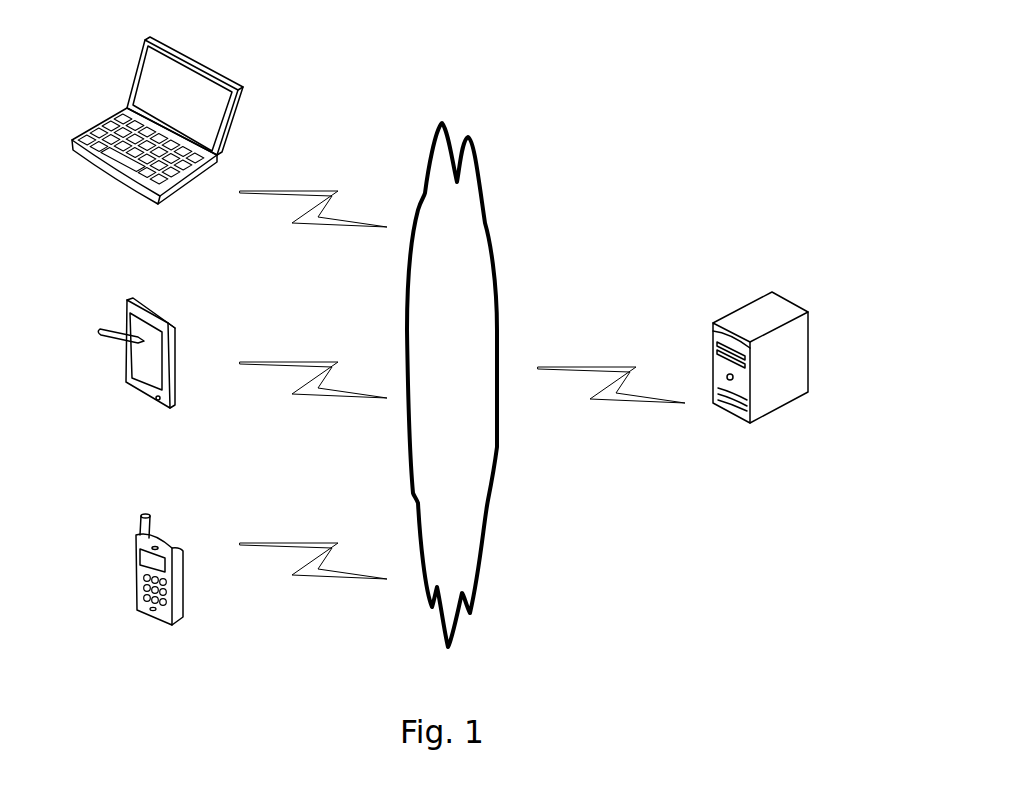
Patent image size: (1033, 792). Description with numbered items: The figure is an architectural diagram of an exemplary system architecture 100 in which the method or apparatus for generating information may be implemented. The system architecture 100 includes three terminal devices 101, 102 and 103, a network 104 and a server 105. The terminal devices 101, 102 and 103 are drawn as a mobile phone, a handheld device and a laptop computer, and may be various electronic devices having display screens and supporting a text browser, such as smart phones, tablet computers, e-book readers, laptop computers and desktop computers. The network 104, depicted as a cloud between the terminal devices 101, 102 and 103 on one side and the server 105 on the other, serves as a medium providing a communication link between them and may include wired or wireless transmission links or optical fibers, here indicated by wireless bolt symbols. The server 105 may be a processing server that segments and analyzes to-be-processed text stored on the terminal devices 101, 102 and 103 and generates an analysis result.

The system architecture 100 is at (670, 28).
The terminal device 101 is at (159, 590).
The terminal device 102 is at (136, 375).
The terminal device 103 is at (157, 140).
The network 104 is at (452, 385).
The server 105 is at (760, 380).